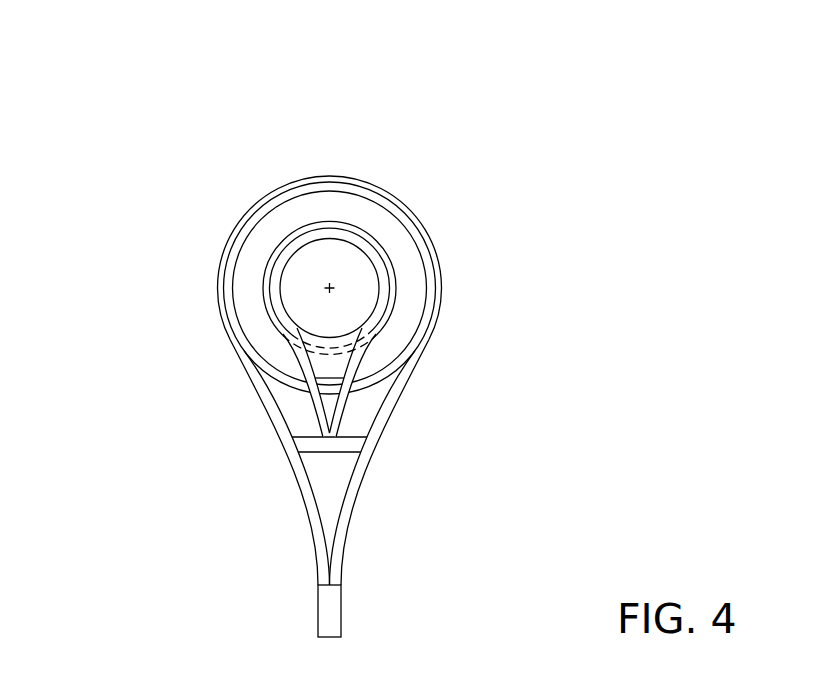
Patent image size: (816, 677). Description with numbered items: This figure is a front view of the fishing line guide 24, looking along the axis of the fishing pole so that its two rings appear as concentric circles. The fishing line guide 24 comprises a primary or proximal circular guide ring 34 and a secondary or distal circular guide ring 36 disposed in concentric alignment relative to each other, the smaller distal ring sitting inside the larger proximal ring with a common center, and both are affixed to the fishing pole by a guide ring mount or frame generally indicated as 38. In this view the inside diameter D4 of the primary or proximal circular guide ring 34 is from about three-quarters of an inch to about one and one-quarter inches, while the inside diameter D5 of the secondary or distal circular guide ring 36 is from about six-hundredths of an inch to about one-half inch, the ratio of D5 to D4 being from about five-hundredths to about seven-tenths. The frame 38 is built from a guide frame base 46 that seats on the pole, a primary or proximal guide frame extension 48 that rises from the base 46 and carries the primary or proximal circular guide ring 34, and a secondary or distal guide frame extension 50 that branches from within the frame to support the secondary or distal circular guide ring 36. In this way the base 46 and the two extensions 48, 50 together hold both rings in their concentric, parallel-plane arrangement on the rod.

The fishing line guide 24 is at (140, 138).
The primary or proximal circular guide ring 34 is at (282, 197).
The secondary or distal circular guide ring 36 is at (347, 235).
The guide ring mount or frame 38 is at (420, 497).
The guide frame base 46 is at (318, 618).
The primary or proximal guide frame extension 48 is at (315, 542).
The secondary or distal guide frame extension 50 is at (308, 399).
The inside diameter of the primary or proximal circular guide ring D4 is at (245, 238).
The inside diameter of the secondary or distal circular guide ring D5 is at (375, 265).